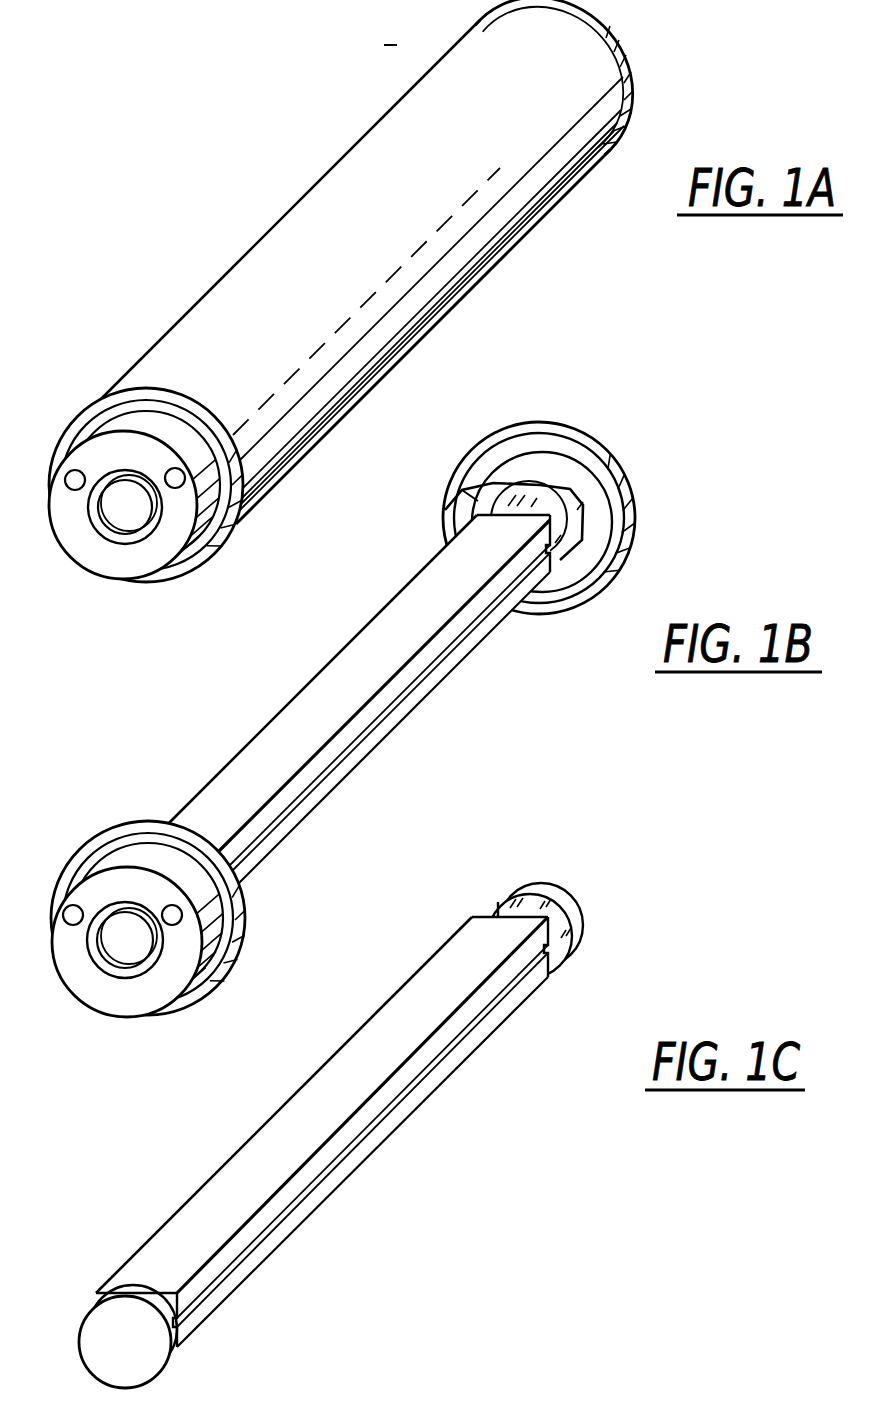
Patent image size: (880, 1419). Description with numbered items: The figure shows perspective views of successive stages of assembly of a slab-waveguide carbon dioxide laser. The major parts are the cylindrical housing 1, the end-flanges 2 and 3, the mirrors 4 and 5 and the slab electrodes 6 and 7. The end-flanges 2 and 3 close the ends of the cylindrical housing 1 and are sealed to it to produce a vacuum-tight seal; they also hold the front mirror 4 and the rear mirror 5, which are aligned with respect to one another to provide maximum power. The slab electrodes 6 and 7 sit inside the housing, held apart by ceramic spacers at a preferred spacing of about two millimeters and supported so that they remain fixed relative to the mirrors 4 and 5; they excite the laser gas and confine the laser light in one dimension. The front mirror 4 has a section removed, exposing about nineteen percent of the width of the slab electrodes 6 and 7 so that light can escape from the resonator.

In FIG. 1A, the cylindrical housing 1 is at (287, 248).
In FIG. 1A, the end-flange 2 is at (626, 58).
In FIG. 1B, the end-flange 2 is at (606, 466).
In FIG. 1A, the end-flange 3 is at (146, 394).
In FIG. 1B, the end-flange 3 is at (150, 824).
In FIG. 1C, the front mirror 4 is at (557, 896).
In FIG. 1C, the mirror 5 is at (90, 1340).
In FIG. 1C, the slab electrode 6 is at (342, 1075).
In FIG. 1C, the slab electrode 7 is at (390, 1122).